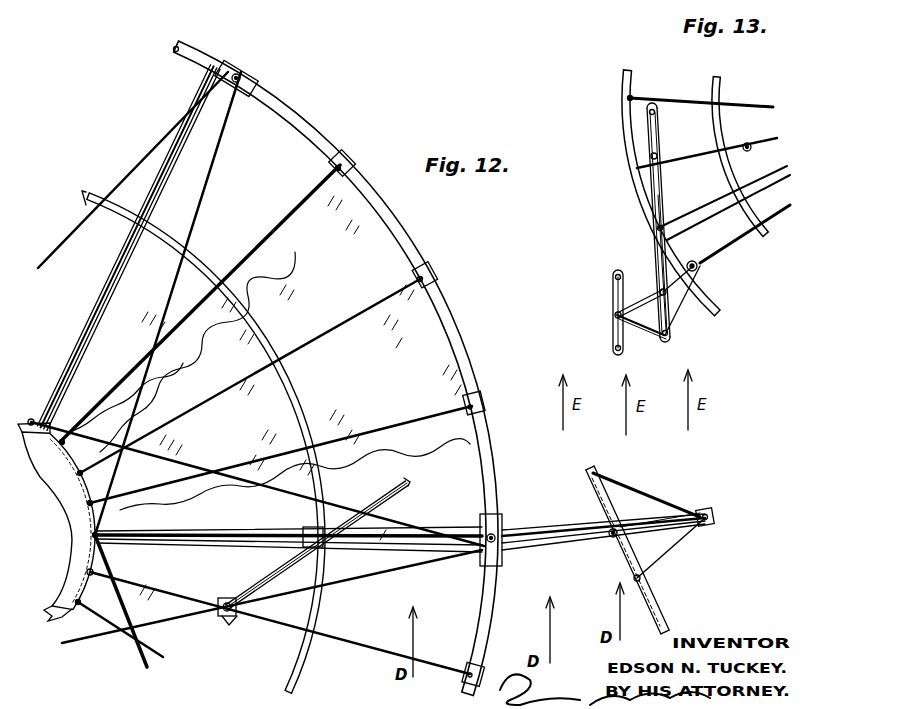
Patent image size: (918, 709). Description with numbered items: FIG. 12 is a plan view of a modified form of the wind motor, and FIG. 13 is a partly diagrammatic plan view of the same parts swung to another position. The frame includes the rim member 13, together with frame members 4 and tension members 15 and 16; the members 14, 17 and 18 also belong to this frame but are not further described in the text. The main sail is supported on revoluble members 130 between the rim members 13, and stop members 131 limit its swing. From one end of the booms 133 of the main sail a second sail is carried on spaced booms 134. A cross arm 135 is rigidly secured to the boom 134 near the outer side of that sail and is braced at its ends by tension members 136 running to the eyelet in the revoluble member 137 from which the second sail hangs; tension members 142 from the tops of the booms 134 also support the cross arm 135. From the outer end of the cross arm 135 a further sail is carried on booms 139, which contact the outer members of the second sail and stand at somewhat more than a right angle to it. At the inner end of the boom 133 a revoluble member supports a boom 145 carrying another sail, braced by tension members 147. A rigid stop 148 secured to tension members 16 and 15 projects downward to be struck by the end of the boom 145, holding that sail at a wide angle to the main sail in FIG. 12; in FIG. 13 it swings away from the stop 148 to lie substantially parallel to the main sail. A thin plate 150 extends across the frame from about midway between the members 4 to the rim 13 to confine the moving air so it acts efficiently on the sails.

In FIG. 12, the member 4 is at (72, 535).
In FIG. 12, the rim member 13 is at (458, 335).
In FIG. 13, the rim member 13 is at (627, 153).
In FIG. 12, the main rib bar 14 is at (190, 147).
In FIG. 12, the tension member 15 is at (215, 128).
In FIG. 12, the tension member 16 is at (205, 147).
In FIG. 12, the brace rod 17 is at (153, 147).
In FIG. 13, the brace rod 17 is at (745, 237).
In FIG. 12, the rib 18 is at (272, 240).
In FIG. 13, the rib 18 is at (687, 98).
In FIG. 12, the revoluble member 130 is at (240, 76).
In FIG. 12, the stop member 131 is at (221, 598).
In FIG. 13, the stop member 131 is at (751, 150).
In FIG. 12, the boom 133 is at (536, 530).
In FIG. 13, the boom 133 is at (663, 182).
In FIG. 12, the boom 134 is at (713, 512).
In FIG. 13, the boom 134 is at (670, 308).
In FIG. 12, the cross arm 135 is at (603, 526).
In FIG. 13, the cross arm 135 is at (640, 295).
In FIG. 12, the tension member 136 is at (613, 539).
In FIG. 13, the tension member 136 is at (692, 261).
In FIG. 12, the revoluble member 137 is at (657, 518).
In FIG. 12, the boom 139 is at (656, 598).
In FIG. 13, the boom 139 is at (612, 300).
In FIG. 12, the tension member 142 is at (637, 484).
In FIG. 13, the tension member 142 is at (651, 338).
In FIG. 12, the boom 145 is at (349, 527).
In FIG. 13, the boom 145 is at (661, 130).
In FIG. 12, the tension member 147 is at (381, 513).
In FIG. 13, the tension member 147 is at (662, 198).
In FIG. 12, the rigid stop 148 is at (308, 527).
In FIG. 13, the rigid stop 148 is at (748, 193).
In FIG. 12, the thin plate 150 is at (376, 228).